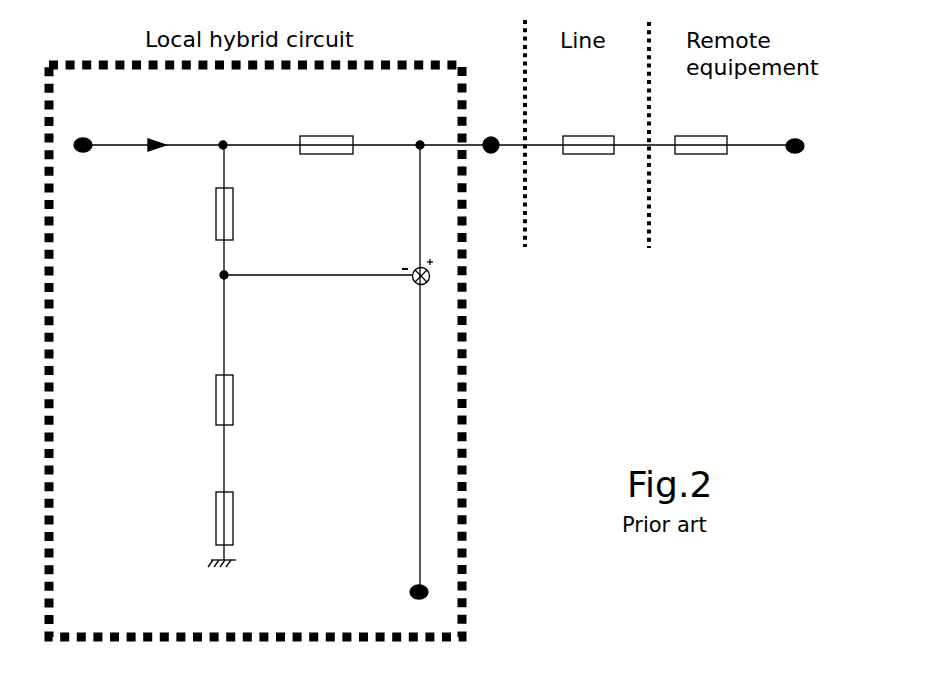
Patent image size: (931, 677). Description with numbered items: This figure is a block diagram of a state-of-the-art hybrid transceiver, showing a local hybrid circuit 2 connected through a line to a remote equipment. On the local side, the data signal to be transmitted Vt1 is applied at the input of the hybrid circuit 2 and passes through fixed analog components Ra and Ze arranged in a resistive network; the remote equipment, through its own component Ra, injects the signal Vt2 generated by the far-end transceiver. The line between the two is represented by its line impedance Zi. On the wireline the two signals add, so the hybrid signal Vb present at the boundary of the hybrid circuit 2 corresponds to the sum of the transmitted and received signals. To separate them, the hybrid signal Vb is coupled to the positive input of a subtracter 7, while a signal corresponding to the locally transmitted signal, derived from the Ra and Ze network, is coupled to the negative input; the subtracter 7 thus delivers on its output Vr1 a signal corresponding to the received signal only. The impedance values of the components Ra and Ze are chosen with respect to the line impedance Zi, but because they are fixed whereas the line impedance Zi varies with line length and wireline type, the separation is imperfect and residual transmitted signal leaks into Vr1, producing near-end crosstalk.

The hybrid circuit 2 is at (467, 388).
The subtracter 7 is at (410, 284).
The analog component impedance Ra is at (221, 211).
The analog component impedance Ze is at (221, 399).
The line impedance Zi is at (585, 154).
The data signal to be transmitted Vt1 is at (86, 152).
The remote transmitted signal Vt2 is at (795, 153).
The hybrid signal Vb is at (491, 137).
The signal voltage corresponding to received signal Vr1 is at (410, 593).